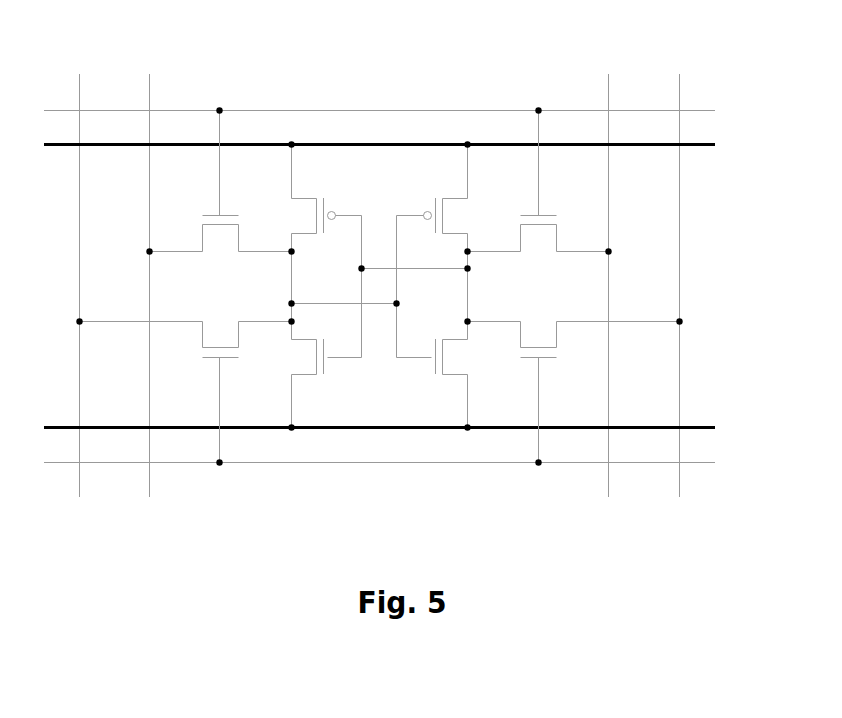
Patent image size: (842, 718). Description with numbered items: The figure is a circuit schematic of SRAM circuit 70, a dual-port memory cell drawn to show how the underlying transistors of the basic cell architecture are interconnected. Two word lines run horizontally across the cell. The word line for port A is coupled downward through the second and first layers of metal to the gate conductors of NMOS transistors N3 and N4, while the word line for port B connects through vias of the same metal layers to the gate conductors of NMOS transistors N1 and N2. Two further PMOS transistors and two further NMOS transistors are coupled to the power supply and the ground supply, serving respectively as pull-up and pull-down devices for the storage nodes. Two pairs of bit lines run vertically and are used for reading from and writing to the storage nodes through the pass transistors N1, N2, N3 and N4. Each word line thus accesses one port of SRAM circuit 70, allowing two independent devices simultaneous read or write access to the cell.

The SRAM circuit 70 is at (679, 38).
The NMOS transistor N1 is at (186, 382).
The NMOS transistor N2 is at (574, 379).
The NMOS transistor N3 is at (538, 195).
The NMOS transistor N4 is at (221, 194).